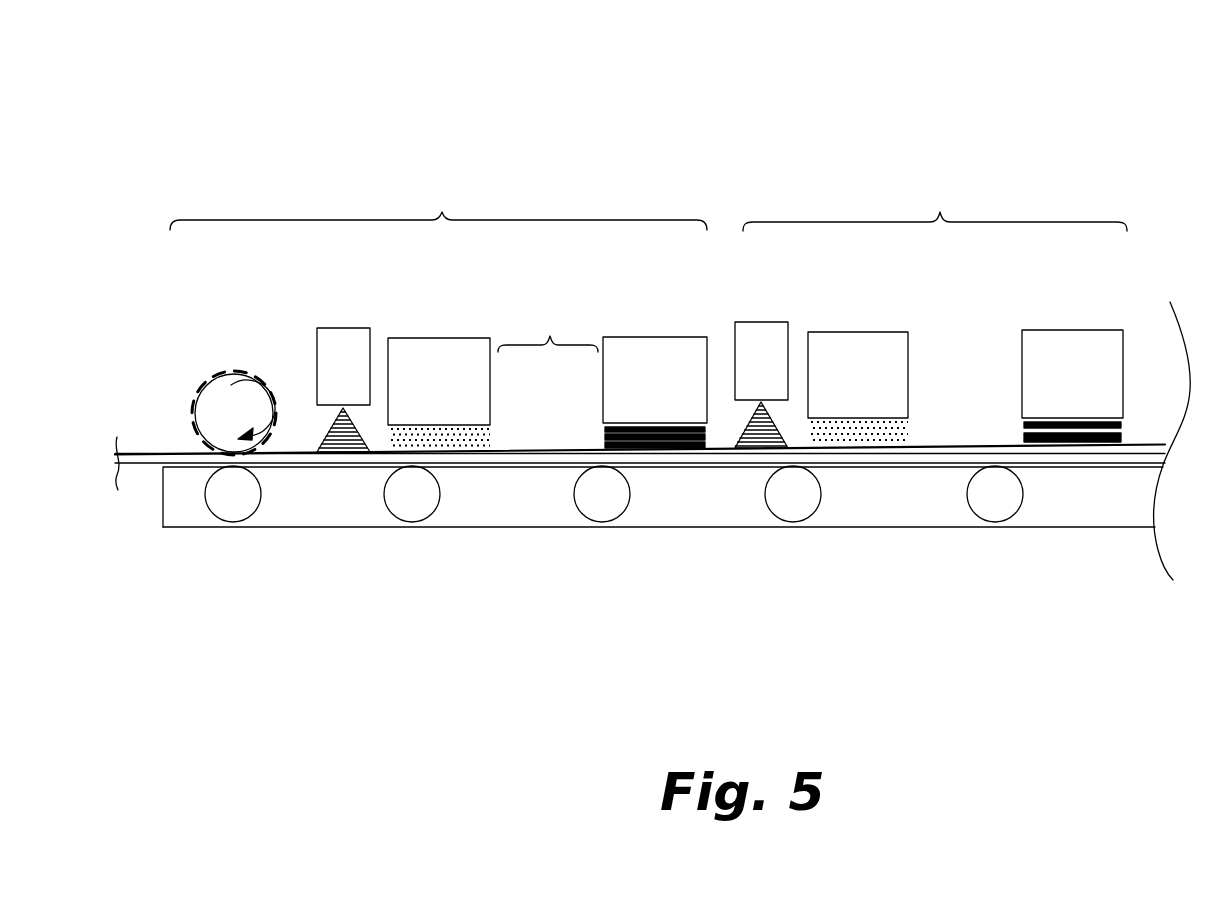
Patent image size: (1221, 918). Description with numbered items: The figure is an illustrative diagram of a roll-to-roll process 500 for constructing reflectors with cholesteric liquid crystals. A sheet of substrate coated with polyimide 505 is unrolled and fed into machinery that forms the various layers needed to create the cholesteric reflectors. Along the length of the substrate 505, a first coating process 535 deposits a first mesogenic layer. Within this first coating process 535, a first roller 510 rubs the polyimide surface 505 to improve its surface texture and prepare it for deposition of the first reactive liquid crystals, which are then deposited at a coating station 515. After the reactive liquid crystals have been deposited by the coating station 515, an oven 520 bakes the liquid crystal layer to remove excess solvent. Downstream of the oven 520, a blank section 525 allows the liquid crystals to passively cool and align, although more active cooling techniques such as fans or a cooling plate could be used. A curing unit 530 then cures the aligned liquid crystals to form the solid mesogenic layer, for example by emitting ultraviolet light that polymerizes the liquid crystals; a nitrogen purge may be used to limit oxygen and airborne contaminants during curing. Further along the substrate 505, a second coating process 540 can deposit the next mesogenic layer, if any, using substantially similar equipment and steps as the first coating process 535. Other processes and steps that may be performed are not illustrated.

The roll-to-roll process 500 is at (245, 108).
The polyimide coated substrate 505 is at (185, 454).
The first roller 510 is at (217, 397).
The coating station 515 is at (328, 342).
The oven 520 is at (427, 348).
The blank section 525 is at (548, 327).
The curing unit 530 is at (653, 342).
The first coating process 535 is at (438, 205).
The second coating process 540 is at (935, 206).